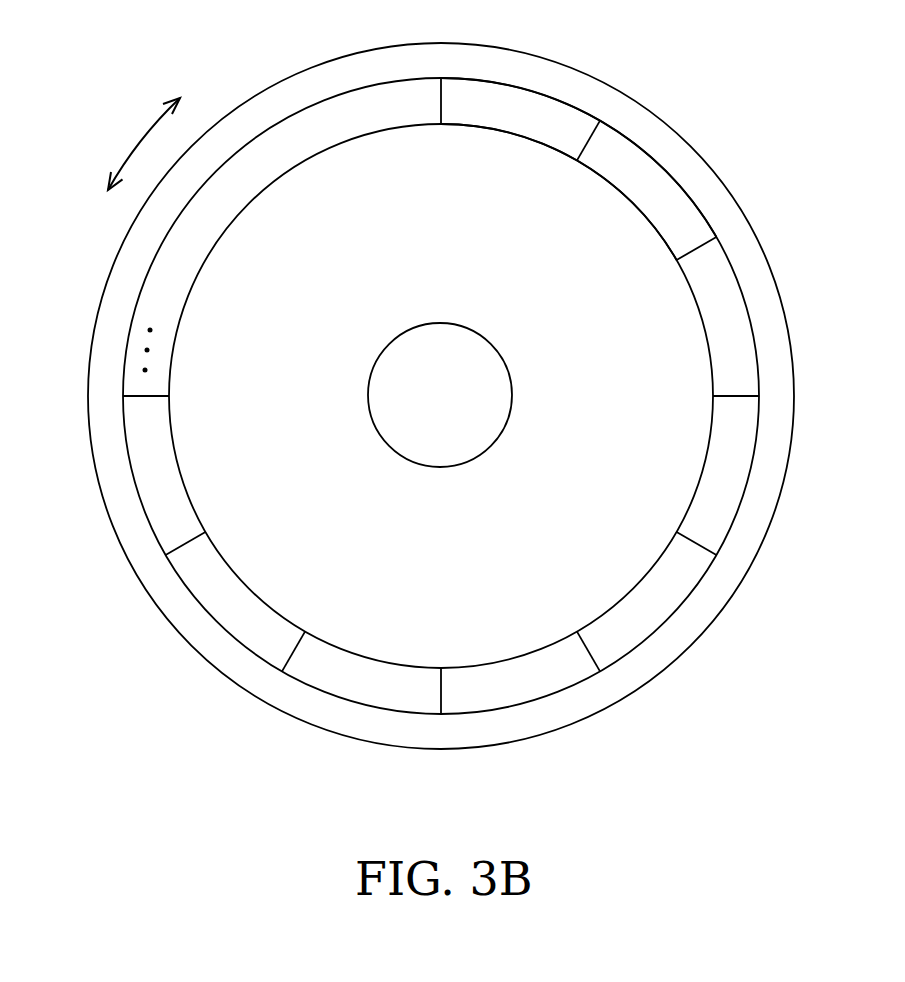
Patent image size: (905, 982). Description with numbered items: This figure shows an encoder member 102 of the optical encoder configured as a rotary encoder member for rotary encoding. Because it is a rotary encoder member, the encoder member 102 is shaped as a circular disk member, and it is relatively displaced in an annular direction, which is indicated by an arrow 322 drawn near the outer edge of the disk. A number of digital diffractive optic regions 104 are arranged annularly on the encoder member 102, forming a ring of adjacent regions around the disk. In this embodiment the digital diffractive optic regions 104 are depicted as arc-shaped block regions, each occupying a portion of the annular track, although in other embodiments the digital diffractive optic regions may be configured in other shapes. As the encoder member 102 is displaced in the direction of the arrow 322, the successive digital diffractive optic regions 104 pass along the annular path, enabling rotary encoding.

The encoder member 102 is at (745, 220).
The digital diffractive optic regions 104 is at (553, 118).
The arrow 322 is at (140, 137).